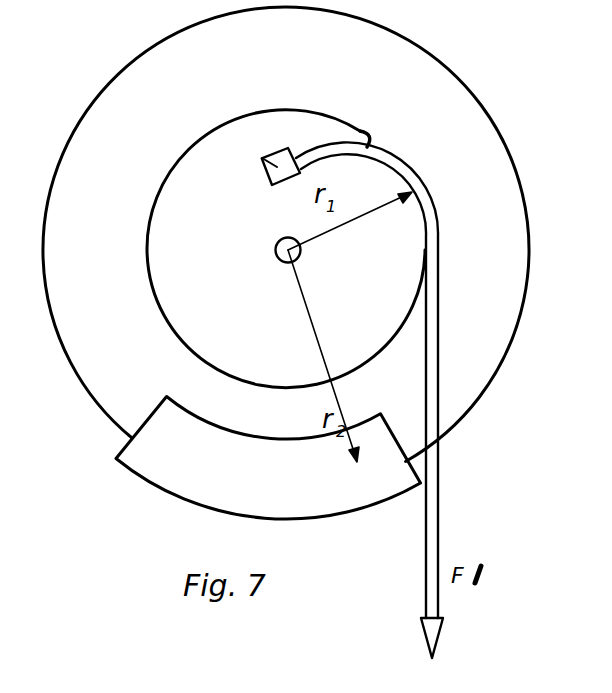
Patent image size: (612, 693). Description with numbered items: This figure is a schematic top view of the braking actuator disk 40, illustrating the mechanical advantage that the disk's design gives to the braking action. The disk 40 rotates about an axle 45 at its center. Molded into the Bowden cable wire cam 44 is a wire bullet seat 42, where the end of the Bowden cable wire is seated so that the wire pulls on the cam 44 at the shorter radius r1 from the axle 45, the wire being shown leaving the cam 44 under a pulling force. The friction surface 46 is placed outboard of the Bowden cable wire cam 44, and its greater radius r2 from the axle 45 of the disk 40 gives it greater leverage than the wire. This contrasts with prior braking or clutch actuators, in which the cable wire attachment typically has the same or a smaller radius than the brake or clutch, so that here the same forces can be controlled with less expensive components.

The disk 40 is at (447, 117).
The wire bullet seat 42 is at (262, 158).
The Bowden cable wire cam 44 is at (380, 260).
The axle 45 is at (275, 250).
The friction surface 46 is at (165, 460).